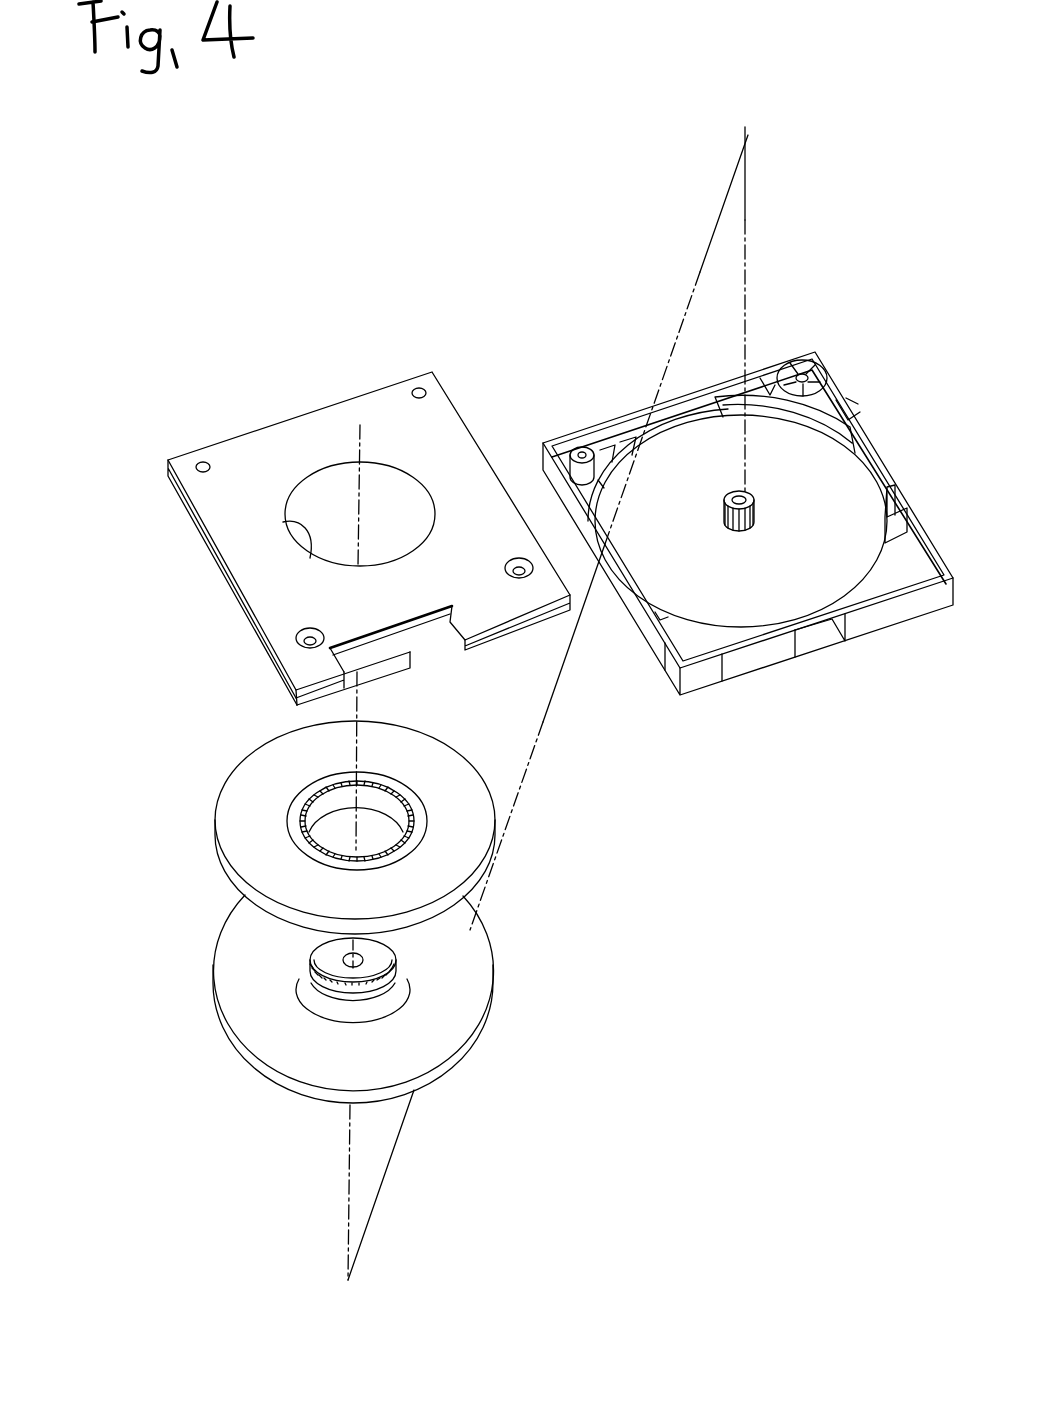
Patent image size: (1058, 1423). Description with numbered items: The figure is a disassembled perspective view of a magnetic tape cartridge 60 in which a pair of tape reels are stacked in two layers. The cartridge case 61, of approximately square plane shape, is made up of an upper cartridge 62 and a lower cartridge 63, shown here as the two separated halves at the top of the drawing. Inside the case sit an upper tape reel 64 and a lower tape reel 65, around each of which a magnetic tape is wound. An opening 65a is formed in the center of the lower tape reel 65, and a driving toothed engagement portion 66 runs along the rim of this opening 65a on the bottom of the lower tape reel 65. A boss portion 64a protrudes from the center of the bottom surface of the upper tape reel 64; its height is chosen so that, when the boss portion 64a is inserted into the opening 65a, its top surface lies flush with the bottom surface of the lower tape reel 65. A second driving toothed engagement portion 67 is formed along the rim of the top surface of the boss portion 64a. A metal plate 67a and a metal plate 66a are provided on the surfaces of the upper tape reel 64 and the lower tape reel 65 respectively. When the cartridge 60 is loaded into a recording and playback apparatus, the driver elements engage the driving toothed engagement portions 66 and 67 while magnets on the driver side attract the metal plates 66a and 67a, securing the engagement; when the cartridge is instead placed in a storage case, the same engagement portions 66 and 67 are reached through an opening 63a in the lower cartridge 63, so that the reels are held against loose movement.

The magnetic tape cartridge 60 is at (475, 213).
The cartridge case 61 is at (780, 253).
The upper cartridge 62 is at (769, 358).
The lower cartridge 63 is at (388, 412).
The opening 63a is at (308, 540).
The upper tape reel 64 is at (455, 1010).
The boss portion 64a is at (332, 1000).
The lower tape reel 65 is at (468, 836).
The opening 65a is at (335, 812).
The driving toothed engagement portion 66 is at (302, 818).
The metal plate 66a is at (307, 788).
The driving toothed engagement portion 67 is at (303, 953).
The metal plate 67a is at (378, 957).